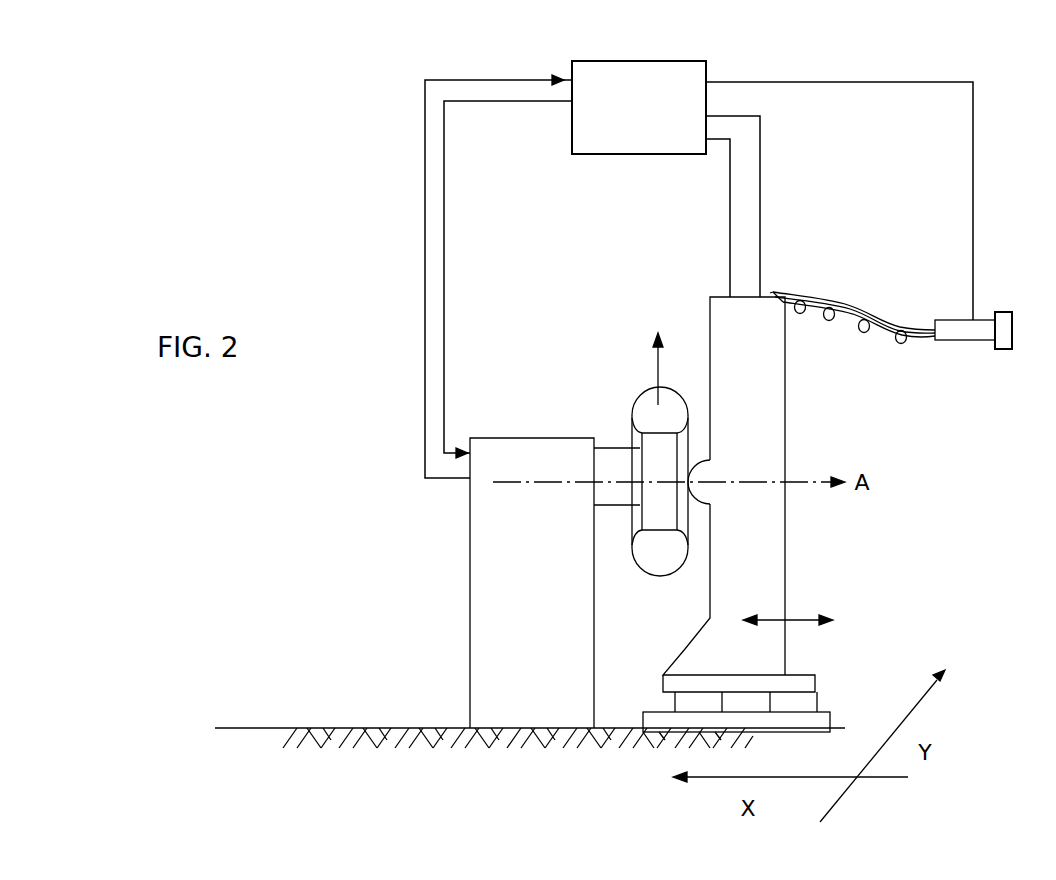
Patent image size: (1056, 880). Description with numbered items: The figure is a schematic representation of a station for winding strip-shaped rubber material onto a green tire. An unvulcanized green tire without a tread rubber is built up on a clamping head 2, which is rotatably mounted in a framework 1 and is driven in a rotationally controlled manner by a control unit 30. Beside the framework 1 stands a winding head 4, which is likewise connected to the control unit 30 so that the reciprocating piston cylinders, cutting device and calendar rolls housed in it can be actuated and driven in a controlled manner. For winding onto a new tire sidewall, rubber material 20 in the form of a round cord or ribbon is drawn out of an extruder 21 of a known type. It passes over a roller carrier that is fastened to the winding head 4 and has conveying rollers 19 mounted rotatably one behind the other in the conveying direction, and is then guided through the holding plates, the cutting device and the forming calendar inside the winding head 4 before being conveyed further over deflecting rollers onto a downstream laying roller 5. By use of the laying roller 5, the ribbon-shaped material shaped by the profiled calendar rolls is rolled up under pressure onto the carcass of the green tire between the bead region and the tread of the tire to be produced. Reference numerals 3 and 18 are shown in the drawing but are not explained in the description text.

The framework 1 is at (497, 598).
The clamping head 2 is at (612, 465).
The rotating body 3 is at (650, 400).
The winding head 4 is at (765, 375).
The laying roller 5 is at (703, 470).
The cable bundle 18 is at (842, 320).
The conveying rollers 19 is at (865, 335).
The rubber material 20 is at (925, 325).
The extruder 21 is at (975, 330).
The control unit 30 is at (633, 80).